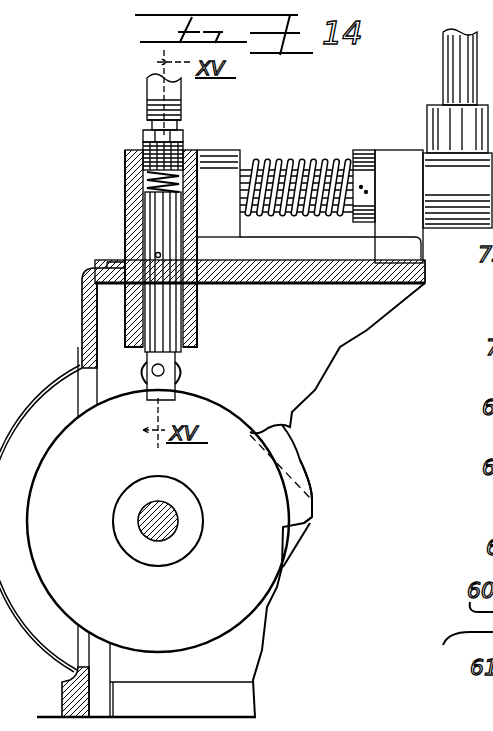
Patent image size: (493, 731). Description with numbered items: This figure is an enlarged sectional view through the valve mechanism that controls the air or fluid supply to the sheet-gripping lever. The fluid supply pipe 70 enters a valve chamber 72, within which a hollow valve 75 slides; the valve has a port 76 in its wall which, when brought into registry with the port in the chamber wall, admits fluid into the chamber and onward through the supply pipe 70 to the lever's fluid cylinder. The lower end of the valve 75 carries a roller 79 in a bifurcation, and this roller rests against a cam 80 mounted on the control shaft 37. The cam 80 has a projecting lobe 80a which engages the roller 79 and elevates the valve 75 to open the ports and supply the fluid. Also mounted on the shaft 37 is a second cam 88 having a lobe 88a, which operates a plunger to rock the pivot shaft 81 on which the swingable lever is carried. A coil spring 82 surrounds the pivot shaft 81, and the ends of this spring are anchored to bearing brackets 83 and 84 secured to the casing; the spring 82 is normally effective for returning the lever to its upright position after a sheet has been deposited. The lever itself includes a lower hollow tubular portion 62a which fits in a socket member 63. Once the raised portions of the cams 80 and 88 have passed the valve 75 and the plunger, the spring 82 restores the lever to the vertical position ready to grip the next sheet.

The fluid supply pipe 70 is at (148, 103).
The valve chamber 72 is at (128, 226).
The hollow valve 75 is at (148, 300).
The port 76 is at (160, 257).
The roller 79 is at (182, 375).
The cam 80 is at (228, 447).
The pivot shaft 81 is at (311, 168).
The coil spring 82 is at (291, 218).
The bearing bracket 83 is at (362, 215).
The bearing bracket 84 is at (223, 203).
The lower hollow tubular portion 62a is at (450, 97).
The socket member 63 is at (443, 133).
The control shaft 37 is at (167, 515).
The projecting lobe 80a is at (302, 470).
The lobe 88a is at (314, 532).
The cam 88 is at (283, 568).